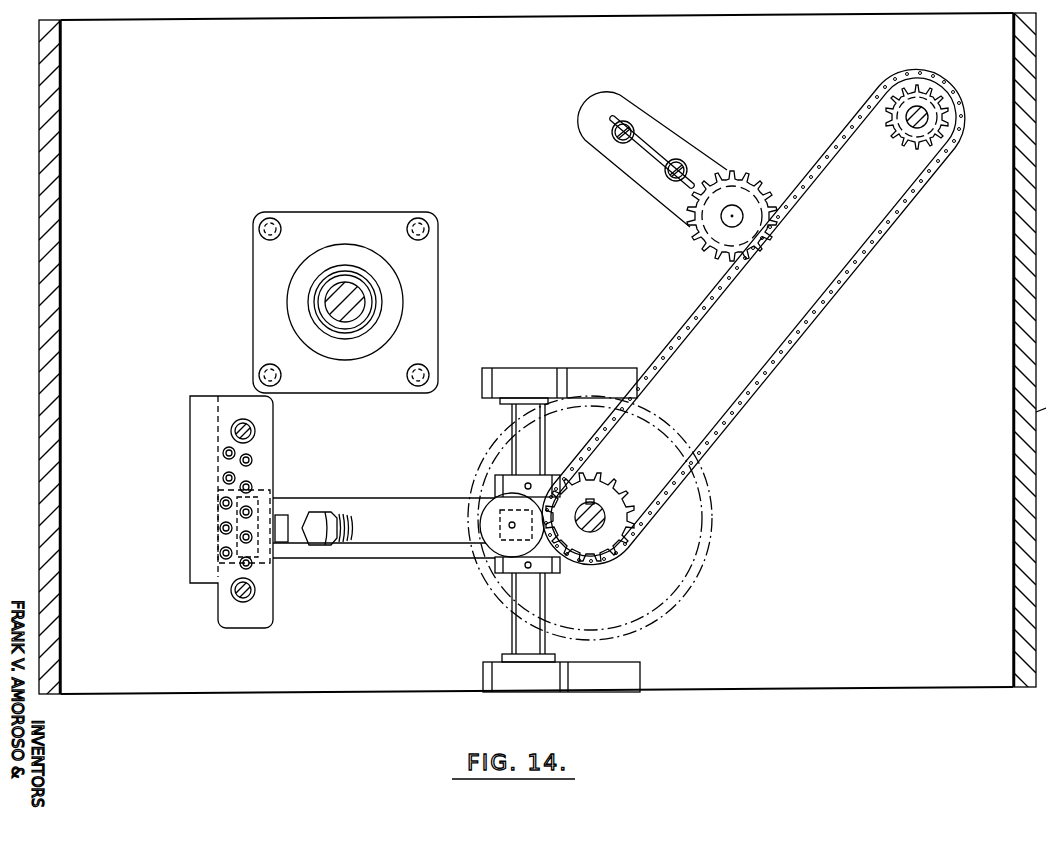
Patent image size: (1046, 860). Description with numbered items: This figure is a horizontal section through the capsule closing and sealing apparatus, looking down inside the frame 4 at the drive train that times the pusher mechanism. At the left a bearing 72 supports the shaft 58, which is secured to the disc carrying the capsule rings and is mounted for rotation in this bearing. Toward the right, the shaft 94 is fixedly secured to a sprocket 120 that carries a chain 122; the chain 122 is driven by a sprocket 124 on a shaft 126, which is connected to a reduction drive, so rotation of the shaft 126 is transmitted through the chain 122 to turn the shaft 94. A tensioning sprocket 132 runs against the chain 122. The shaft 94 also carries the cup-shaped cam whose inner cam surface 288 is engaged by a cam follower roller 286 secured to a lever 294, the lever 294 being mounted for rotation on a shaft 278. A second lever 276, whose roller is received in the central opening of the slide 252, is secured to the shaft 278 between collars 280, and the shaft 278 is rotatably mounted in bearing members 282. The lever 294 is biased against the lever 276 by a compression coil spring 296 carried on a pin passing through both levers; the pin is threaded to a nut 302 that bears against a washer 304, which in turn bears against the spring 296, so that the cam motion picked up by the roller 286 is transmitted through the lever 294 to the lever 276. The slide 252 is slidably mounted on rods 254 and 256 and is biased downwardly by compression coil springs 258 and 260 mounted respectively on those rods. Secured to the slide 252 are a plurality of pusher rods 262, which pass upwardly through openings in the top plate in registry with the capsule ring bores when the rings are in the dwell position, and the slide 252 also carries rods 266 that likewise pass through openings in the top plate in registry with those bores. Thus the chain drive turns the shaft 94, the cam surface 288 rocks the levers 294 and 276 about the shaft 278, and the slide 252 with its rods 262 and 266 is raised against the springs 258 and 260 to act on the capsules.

The frame 4 is at (39, 421).
The bearing 72 is at (246, 259).
The shaft 58 is at (360, 298).
The shaft 94 is at (594, 532).
The sprocket 120 is at (655, 482).
The chain 122 is at (783, 353).
The sprocket 124 is at (898, 141).
The shaft 126 is at (921, 112).
The tensioner sprocket arm 132 is at (757, 180).
The slide 252 is at (198, 510).
The rod 254 is at (256, 428).
The rod 256 is at (256, 590).
The compression coil spring 258 is at (231, 430).
The compression coil spring 260 is at (244, 601).
The pusher rods 262 is at (253, 486).
The rods 266 is at (222, 456).
The lever 276 is at (387, 558).
The shaft 278 is at (521, 631).
The collars 280 is at (548, 473).
The bearing member 282 is at (530, 384).
The cam follower roller 286 is at (492, 507).
The inner cam surface 288 is at (700, 570).
The lever 294 is at (413, 518).
The compression coil spring 296 is at (352, 527).
The nut 302 is at (315, 536).
The washer 304 is at (332, 547).